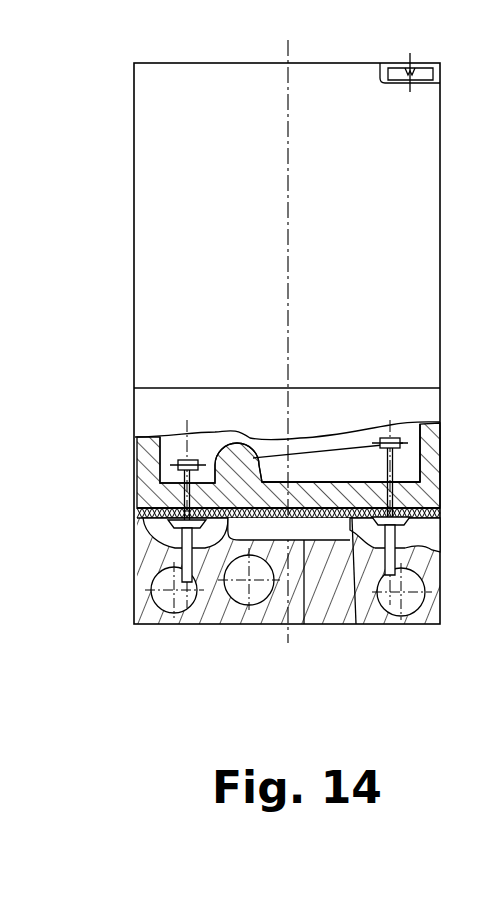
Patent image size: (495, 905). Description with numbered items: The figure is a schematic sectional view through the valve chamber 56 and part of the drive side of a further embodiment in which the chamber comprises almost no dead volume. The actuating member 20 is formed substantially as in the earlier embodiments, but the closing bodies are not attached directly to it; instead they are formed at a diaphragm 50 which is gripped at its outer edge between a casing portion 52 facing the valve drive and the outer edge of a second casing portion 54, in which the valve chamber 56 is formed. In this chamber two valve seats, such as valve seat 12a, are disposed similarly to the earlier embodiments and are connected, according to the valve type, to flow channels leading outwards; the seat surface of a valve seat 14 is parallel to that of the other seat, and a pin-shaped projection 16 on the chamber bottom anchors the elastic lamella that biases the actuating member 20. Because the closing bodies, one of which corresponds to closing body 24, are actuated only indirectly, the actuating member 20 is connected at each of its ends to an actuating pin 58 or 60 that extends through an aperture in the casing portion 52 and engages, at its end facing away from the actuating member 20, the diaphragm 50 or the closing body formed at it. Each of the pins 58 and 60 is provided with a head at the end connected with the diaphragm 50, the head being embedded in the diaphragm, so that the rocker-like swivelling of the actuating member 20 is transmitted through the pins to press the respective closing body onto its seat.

The valve seat 12a is at (140, 535).
The valve seat 14 is at (432, 554).
The pin-shaped projection 16 is at (262, 469).
The actuating member 20 is at (323, 450).
The closing body 24 is at (424, 527).
The diaphragm 50 is at (356, 624).
The casing portion 52 is at (432, 448).
The second casing portion 54 is at (433, 600).
The valve chamber 56 is at (304, 624).
The actuating pin 58 is at (140, 498).
The actuating pin 60 is at (422, 470).